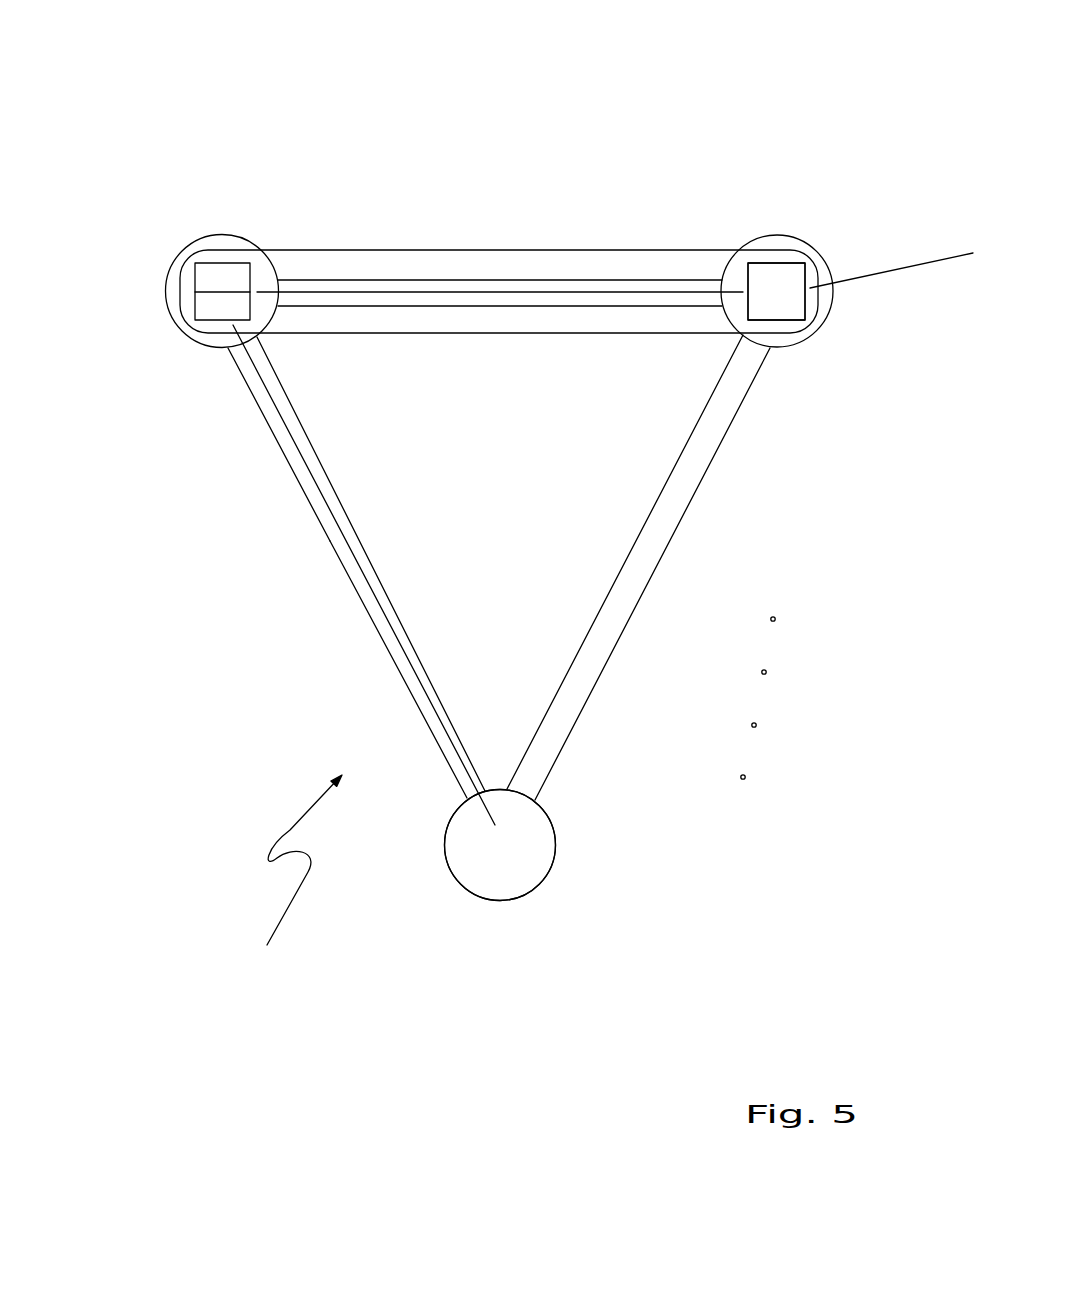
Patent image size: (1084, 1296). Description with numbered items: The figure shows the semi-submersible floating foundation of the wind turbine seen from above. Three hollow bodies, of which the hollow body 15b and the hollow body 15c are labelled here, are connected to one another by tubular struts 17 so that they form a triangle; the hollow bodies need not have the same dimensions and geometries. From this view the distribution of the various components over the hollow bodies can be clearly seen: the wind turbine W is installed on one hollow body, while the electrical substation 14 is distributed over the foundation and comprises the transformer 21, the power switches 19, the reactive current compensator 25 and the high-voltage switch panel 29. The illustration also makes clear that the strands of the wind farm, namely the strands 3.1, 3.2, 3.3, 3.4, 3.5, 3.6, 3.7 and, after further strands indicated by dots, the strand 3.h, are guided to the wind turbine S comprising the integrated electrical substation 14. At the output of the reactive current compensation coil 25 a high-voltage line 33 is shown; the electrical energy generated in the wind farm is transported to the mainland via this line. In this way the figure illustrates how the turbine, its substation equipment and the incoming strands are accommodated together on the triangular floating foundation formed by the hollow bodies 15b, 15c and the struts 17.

The electrical substation 14 is at (690, 249).
The hollow body 15b is at (783, 236).
The hollow body 15c is at (205, 236).
The tubular strut 17 is at (398, 279).
The power switches 19 is at (197, 278).
The transformer 21 is at (197, 311).
The reactive current compensator 25 is at (820, 212).
The high-voltage switch panel 29 is at (797, 277).
The high-voltage line 33 is at (923, 265).
The strand 3.1 is at (390, 692).
The strand 3.2 is at (307, 528).
The strand 3.3 is at (243, 378).
The strand 3.4 is at (322, 267).
The strand 3.5 is at (517, 275).
The strand 3.6 is at (632, 292).
The strand 3.7 is at (680, 545).
The strand 3.h is at (582, 733).
The wind turbine W is at (528, 833).
The wind turbine comprising an integrated electrical substation S is at (297, 878).